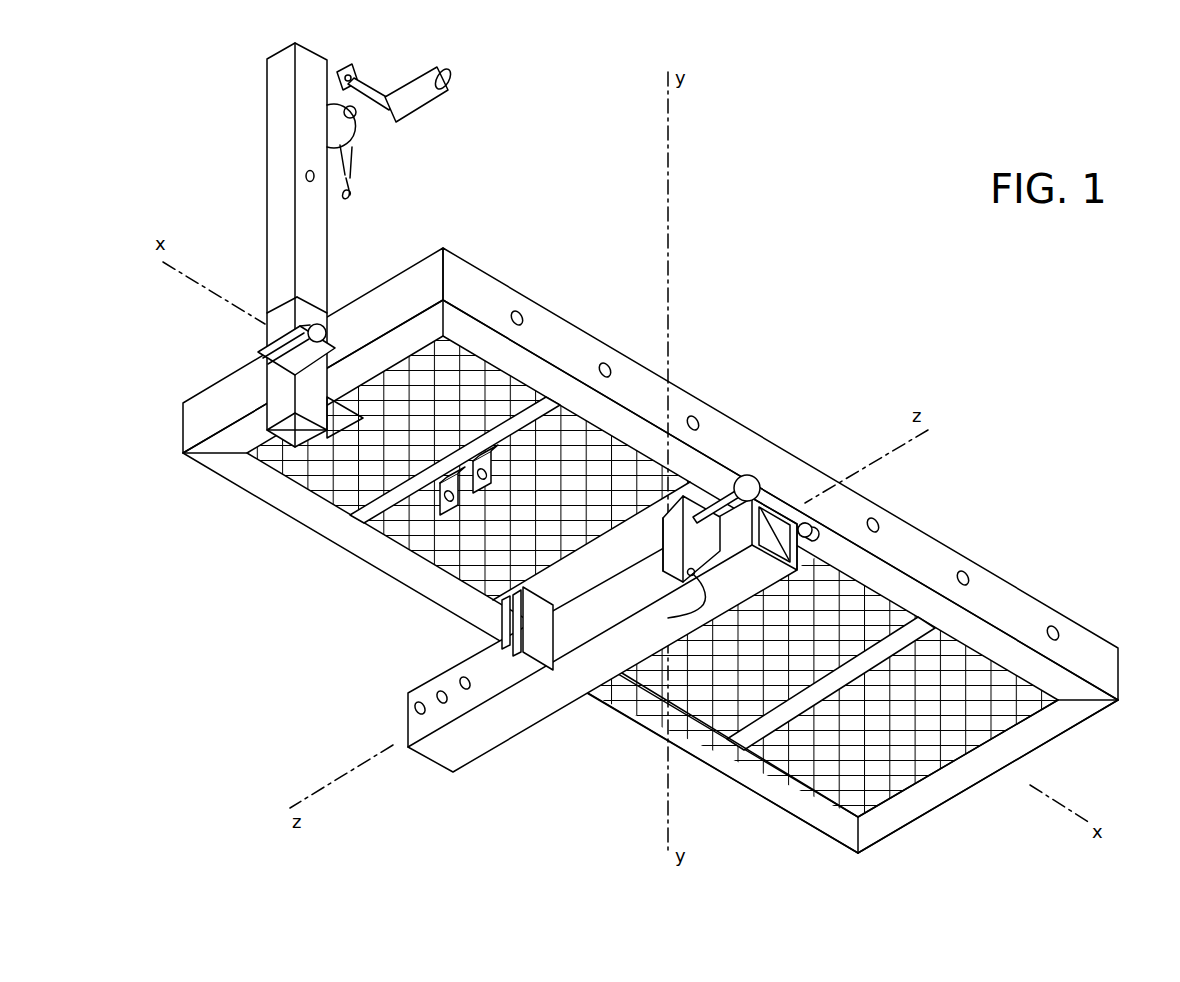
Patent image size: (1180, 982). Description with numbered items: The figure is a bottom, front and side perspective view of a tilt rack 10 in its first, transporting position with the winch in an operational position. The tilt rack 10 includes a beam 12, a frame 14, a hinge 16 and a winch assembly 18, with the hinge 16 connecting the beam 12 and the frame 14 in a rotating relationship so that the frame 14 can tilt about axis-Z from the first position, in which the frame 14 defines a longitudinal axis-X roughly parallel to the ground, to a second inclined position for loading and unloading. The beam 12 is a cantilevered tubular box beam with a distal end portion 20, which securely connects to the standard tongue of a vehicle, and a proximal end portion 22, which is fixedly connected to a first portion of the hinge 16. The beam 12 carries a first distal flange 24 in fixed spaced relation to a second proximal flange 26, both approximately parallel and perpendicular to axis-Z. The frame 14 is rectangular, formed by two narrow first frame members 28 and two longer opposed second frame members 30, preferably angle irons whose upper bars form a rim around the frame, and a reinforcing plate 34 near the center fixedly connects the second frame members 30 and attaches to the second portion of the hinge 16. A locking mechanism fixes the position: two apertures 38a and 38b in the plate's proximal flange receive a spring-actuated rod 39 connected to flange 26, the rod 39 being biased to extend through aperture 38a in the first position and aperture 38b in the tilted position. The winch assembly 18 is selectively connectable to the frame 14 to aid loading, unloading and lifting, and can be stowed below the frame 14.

The tilt rack 10 is at (752, 181).
The beam 12 is at (621, 614).
The frame 14 is at (1118, 642).
The hinge 16 is at (824, 526).
The winch assembly 18 is at (265, 131).
The distal end portion 20 is at (500, 735).
The proximal end portion 22 is at (600, 662).
The first distal flange 24 is at (500, 655).
The second proximal flange 26 is at (712, 540).
The first frame members 28 is at (218, 393).
The second frame members 30 is at (542, 324).
The reinforcing plate 34 is at (588, 590).
The aperture 38a is at (655, 522).
The aperture 38b is at (700, 590).
The spring-actuated rod 39 is at (757, 486).